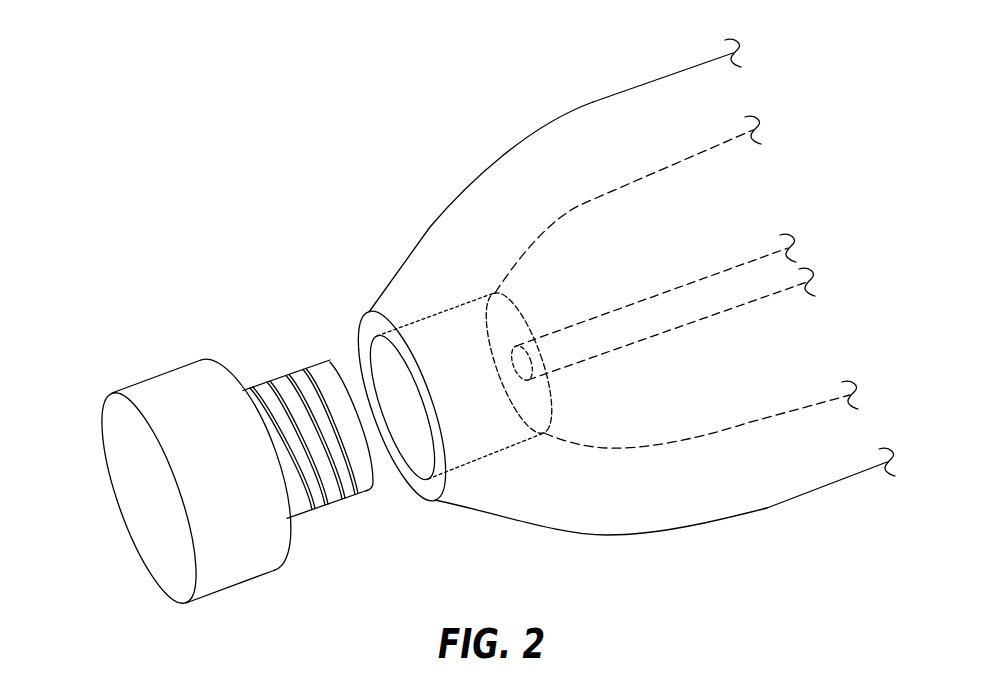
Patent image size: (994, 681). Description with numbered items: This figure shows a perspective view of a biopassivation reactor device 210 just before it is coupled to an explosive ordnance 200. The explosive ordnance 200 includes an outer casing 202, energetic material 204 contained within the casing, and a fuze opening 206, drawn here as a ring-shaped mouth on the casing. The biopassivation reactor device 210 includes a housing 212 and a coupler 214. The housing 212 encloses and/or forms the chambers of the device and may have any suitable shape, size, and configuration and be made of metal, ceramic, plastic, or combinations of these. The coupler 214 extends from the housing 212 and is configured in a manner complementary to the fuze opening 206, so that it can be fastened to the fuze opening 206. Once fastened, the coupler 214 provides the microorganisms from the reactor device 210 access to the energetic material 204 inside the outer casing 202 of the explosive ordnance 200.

The explosive ordnance 200 is at (417, 197).
The outer casing 202 is at (600, 110).
The energetic material 204 is at (735, 400).
The fuze opening 206 is at (417, 443).
The biopassivation reactor device 210 is at (146, 339).
The housing 212 is at (148, 530).
The coupler 214 is at (276, 378).